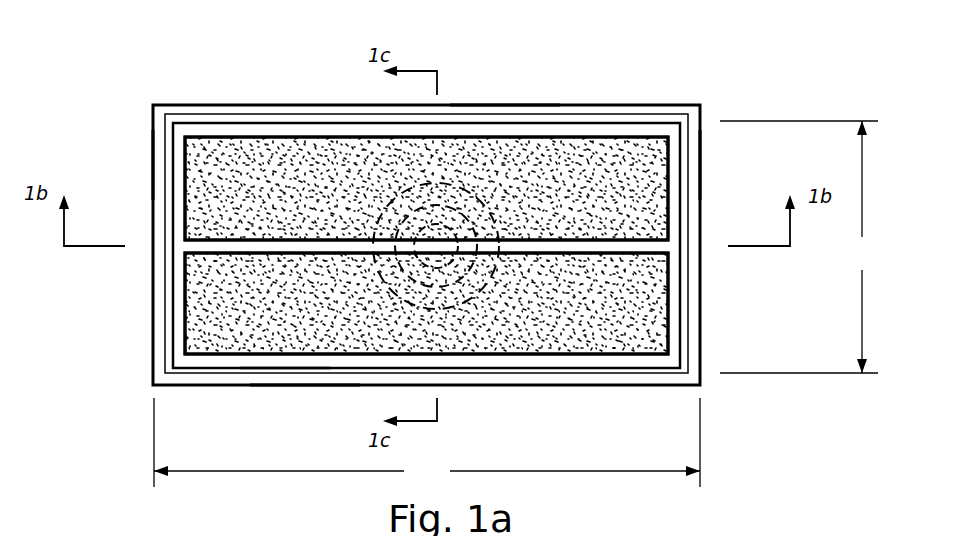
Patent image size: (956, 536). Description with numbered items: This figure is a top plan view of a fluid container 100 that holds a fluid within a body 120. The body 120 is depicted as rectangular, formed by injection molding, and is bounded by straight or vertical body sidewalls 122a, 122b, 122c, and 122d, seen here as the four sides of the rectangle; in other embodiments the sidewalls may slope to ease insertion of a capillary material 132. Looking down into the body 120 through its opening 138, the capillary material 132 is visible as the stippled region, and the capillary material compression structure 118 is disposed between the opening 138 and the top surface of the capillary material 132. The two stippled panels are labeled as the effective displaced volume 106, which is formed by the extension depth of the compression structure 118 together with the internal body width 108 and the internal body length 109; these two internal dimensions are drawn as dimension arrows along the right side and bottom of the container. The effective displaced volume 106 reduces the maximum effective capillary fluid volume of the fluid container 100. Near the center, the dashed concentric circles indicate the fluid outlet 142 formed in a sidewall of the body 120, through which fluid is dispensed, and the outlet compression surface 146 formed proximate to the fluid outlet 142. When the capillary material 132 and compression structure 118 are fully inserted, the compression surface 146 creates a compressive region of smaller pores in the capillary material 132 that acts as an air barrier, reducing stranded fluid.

The fluid container 100 is at (685, 95).
The effective displaced volume 106 is at (596, 202).
The internal body width 108 is at (799, 247).
The internal body length 109 is at (427, 442).
The capillary material compression structure 118 is at (530, 130).
The body 120 is at (600, 405).
The body sidewall 122a is at (500, 113).
The body sidewall 122b is at (697, 145).
The body sidewall 122c is at (300, 378).
The body sidewall 122d is at (158, 143).
The capillary material 132 is at (287, 165).
The opening 138 is at (270, 370).
The fluid outlet 142 is at (428, 186).
The outlet compression surface 146 is at (432, 228).